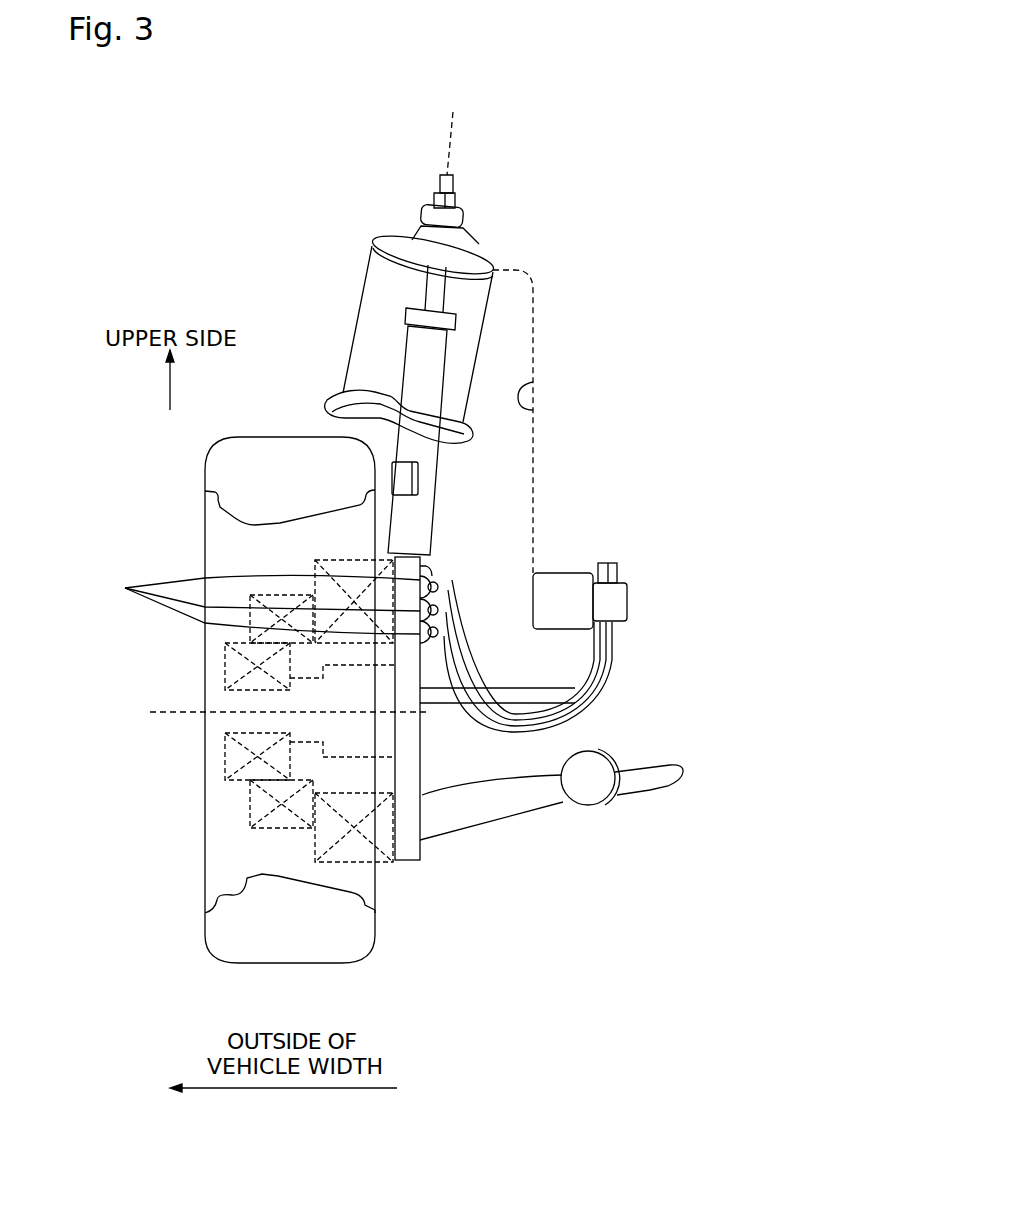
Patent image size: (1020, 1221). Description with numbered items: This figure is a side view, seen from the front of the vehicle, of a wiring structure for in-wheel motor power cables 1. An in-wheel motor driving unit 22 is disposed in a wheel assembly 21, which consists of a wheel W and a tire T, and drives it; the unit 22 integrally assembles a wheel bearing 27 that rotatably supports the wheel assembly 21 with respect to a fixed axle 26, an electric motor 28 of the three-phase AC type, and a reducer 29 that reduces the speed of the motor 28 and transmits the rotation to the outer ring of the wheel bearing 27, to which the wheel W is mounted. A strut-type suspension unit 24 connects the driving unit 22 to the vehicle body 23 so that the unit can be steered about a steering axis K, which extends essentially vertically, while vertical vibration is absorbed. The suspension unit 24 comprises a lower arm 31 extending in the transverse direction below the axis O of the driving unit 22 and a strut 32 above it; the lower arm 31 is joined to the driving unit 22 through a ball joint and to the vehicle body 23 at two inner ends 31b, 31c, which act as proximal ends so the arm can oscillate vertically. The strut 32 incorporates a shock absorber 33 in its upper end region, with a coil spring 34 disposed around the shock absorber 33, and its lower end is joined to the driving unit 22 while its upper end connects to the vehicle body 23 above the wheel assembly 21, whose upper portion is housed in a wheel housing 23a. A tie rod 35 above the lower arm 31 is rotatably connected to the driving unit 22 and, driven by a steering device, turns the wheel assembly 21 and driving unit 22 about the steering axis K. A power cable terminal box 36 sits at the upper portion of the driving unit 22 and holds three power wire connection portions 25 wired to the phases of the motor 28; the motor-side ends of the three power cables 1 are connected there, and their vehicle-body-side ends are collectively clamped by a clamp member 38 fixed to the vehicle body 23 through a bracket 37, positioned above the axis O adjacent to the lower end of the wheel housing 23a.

The steering axis K is at (453, 112).
The vehicle body 23 is at (372, 240).
The wheel housing 23a is at (535, 409).
The shock absorber 33 is at (435, 343).
The coil spring 34 is at (475, 360).
The strut 32 is at (410, 508).
The power cable terminal box 36 is at (424, 567).
The power cable 1 is at (466, 660).
The clamp member 38 is at (613, 597).
The bracket 37 is at (560, 617).
The tie rod 35 is at (523, 687).
The inner end 31c is at (683, 770).
The inner end 31b is at (592, 792).
The lower arm 31 is at (540, 800).
The suspension unit 24 is at (498, 824).
The in-wheel motor driving unit 22 is at (389, 868).
The wheel assembly 21 is at (200, 920).
The tire T is at (203, 473).
The wheel W is at (200, 490).
The power wire connection portion 25 is at (253, 602).
The axle 26 is at (285, 700).
The wheel bearing 27 is at (320, 736).
The reducer 29 is at (313, 790).
The electric motor 28 is at (322, 828).
The axis O is at (180, 712).